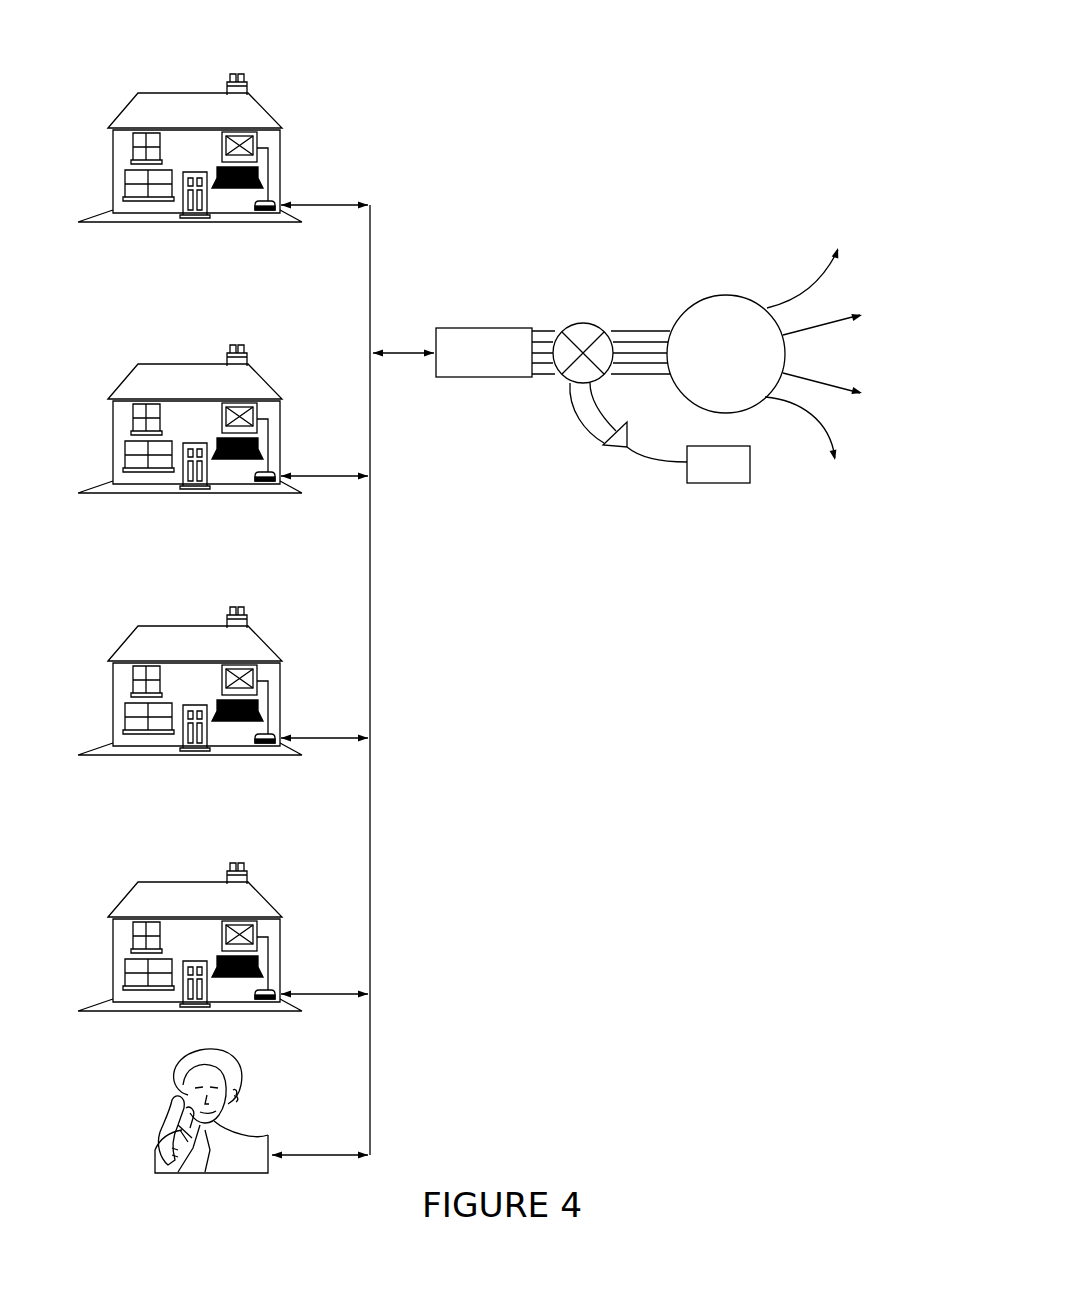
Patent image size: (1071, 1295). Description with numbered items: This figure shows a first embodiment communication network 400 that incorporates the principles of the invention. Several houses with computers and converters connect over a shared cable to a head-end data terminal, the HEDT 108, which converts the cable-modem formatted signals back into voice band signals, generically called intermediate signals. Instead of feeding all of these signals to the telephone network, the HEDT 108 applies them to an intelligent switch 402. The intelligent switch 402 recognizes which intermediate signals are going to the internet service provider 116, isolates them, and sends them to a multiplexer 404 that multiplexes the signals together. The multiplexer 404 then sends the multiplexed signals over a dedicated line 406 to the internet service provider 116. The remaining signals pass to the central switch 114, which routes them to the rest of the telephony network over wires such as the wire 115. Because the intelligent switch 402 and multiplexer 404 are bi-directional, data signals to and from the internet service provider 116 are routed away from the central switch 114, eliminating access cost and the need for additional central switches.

The communication network 400 is at (653, 98).
The head-end data terminal (HEDT) 108 is at (489, 328).
The intelligent switch 402 is at (586, 322).
The central switch 114 is at (722, 296).
The wire 115 is at (833, 278).
The multiplexer 404 is at (618, 446).
The dedicated line 406 is at (648, 463).
The internet service provider 116 is at (720, 484).